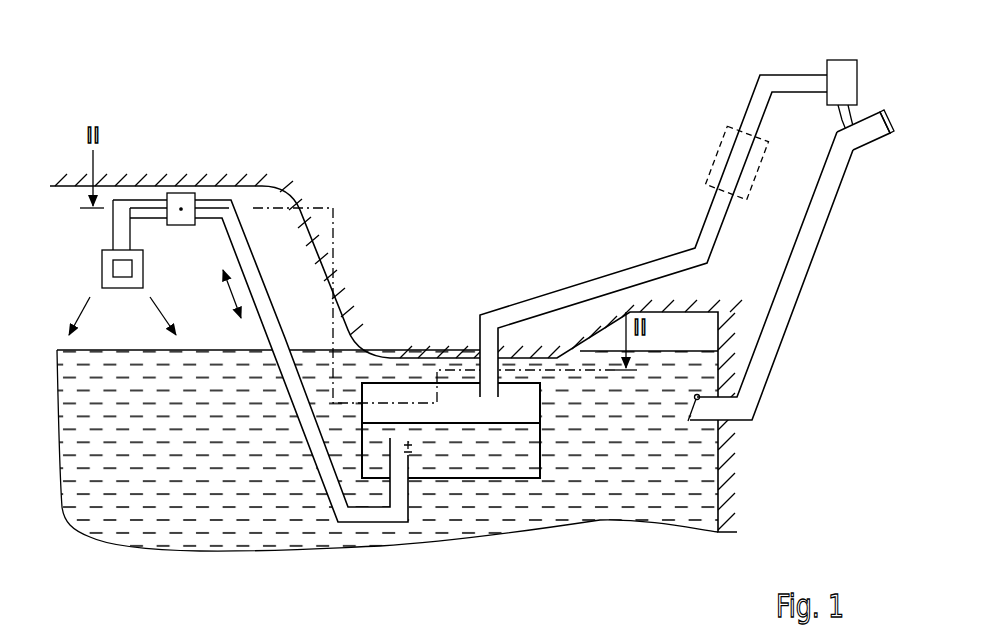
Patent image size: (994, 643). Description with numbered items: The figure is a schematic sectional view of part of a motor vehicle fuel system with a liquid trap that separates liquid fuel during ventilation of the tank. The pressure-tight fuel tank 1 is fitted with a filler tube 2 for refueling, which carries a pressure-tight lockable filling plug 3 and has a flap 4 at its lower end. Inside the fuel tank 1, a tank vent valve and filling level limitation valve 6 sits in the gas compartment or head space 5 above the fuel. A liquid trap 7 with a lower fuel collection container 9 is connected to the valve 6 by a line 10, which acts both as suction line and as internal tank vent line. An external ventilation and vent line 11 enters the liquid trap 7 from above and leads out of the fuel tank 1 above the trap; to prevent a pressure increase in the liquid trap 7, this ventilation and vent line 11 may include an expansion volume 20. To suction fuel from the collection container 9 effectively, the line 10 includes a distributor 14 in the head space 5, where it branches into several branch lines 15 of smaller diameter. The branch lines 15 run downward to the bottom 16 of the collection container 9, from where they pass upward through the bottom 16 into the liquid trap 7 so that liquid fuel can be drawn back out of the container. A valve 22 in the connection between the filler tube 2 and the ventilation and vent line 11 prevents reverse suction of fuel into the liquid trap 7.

The fuel tank 1 is at (268, 148).
The filler tube 2 is at (806, 286).
The filling plug 3 is at (867, 135).
The flap 4 is at (694, 395).
The gas compartment or head space 5 is at (197, 280).
The tank vent valve and filling level limitation valve 6 is at (111, 266).
The liquid trap 7 is at (475, 482).
The fuel collection container 9 is at (468, 415).
The line 10 is at (332, 516).
The ventilation and vent line 11 is at (612, 267).
The distributor 14 is at (182, 192).
The branch lines 15 is at (375, 516).
The bottom 16 is at (430, 480).
The expansion volume 20 is at (713, 155).
The valve 22 is at (841, 63).